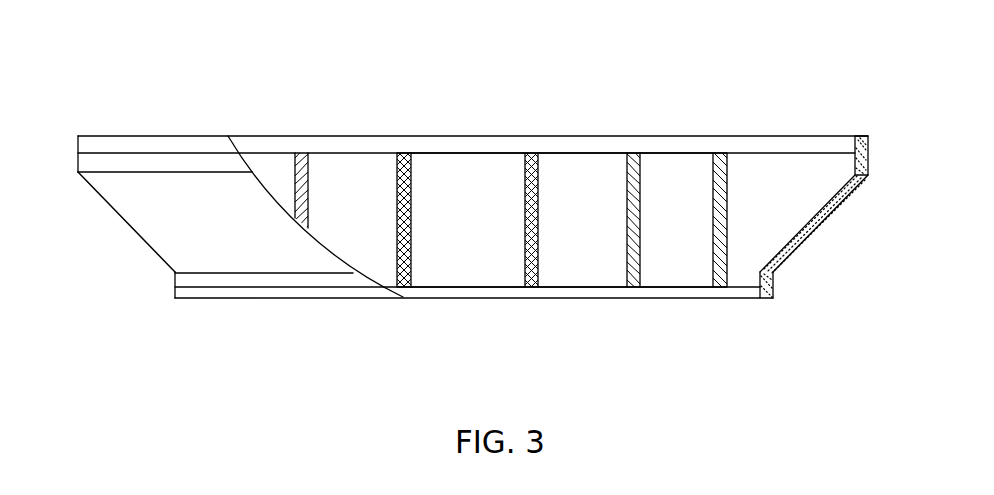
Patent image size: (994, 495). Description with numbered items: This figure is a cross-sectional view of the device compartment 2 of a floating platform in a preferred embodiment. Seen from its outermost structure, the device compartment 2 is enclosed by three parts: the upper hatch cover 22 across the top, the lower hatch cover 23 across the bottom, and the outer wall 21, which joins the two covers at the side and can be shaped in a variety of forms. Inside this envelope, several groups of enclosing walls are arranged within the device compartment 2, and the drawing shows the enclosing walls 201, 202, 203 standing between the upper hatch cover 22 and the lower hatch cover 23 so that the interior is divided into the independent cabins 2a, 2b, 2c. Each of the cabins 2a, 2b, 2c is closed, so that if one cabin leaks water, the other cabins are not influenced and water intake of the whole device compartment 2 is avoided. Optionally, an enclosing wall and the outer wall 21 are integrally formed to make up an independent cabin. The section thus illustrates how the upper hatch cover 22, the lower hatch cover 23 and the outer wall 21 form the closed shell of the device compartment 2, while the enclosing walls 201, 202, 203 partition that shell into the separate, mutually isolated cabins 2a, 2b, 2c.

The device compartment 2 is at (62, 61).
The independent cabin 2a is at (460, 262).
The independent cabin 2b is at (543, 265).
The independent cabin 2c is at (648, 270).
The enclosing wall 201 is at (467, 182).
The enclosing wall 202 is at (627, 157).
The enclosing wall 203 is at (713, 272).
The outer wall 21 is at (817, 223).
The upper hatch cover 22 is at (797, 147).
The lower hatch cover 23 is at (500, 293).